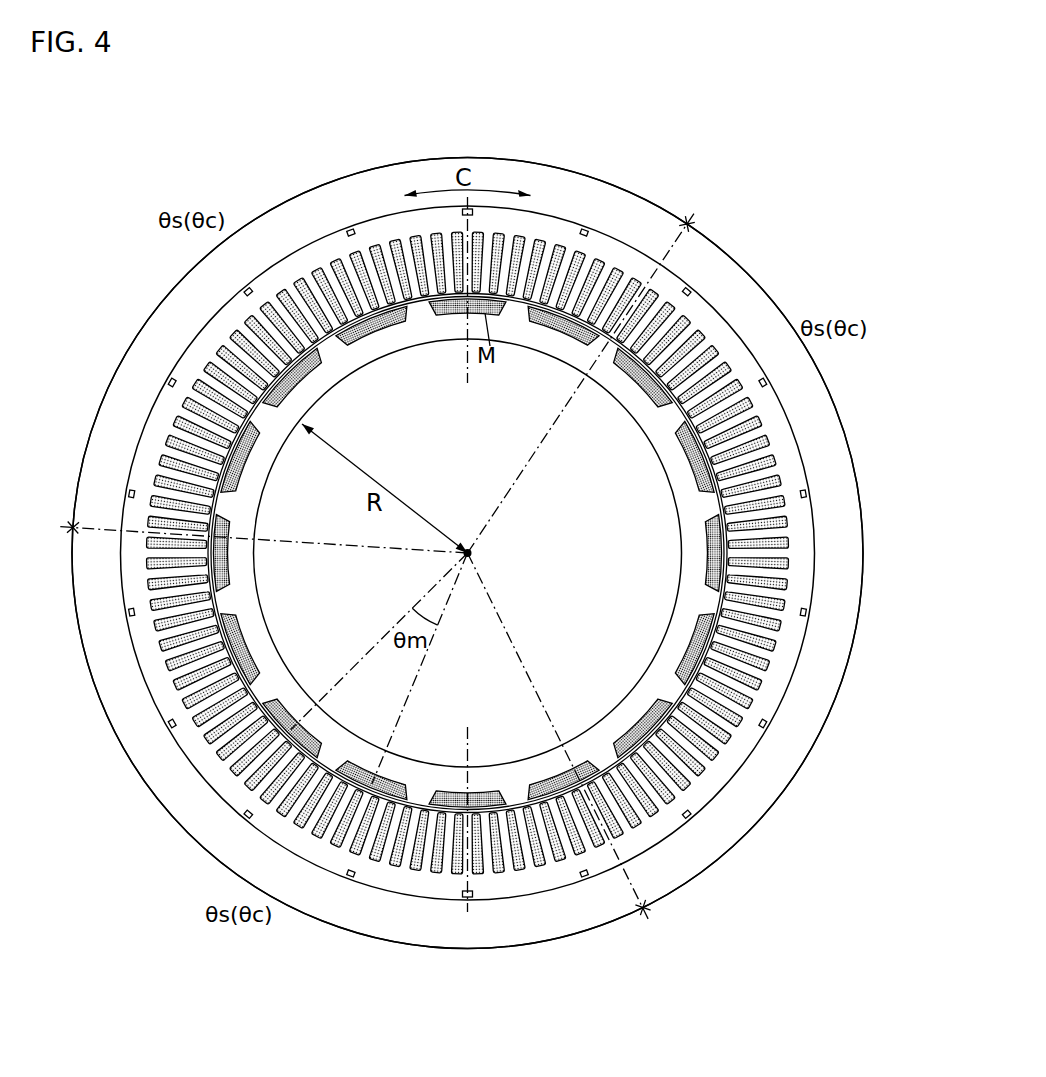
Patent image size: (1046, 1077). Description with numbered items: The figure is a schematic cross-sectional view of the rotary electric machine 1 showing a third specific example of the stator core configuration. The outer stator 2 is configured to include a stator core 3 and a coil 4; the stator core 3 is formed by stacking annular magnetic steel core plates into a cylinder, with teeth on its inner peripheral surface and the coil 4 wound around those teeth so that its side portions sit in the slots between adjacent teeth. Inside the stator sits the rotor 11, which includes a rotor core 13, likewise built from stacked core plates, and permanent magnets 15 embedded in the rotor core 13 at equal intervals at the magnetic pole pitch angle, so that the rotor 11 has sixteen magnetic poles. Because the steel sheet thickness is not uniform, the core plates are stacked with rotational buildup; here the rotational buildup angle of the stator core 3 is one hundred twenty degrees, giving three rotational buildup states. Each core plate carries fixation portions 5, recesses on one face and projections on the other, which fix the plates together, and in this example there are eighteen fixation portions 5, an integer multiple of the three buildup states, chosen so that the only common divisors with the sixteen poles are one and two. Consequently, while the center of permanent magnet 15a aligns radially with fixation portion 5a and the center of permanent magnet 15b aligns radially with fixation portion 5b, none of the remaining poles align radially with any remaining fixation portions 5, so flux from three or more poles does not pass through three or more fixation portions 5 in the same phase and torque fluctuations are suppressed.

The rotary electric machine 1 is at (728, 172).
The stator 2 is at (697, 268).
The stator core 3 is at (723, 337).
The coil 4 is at (169, 439).
The fixation portions 5 is at (246, 812).
The fixation portion 5a is at (473, 211).
The fixation portion 5b is at (466, 898).
The rotor 11 is at (662, 478).
The rotor core 13 is at (613, 733).
The permanent magnets 15 is at (690, 442).
The permanent magnet 15a is at (448, 313).
The permanent magnet 15b is at (483, 793).